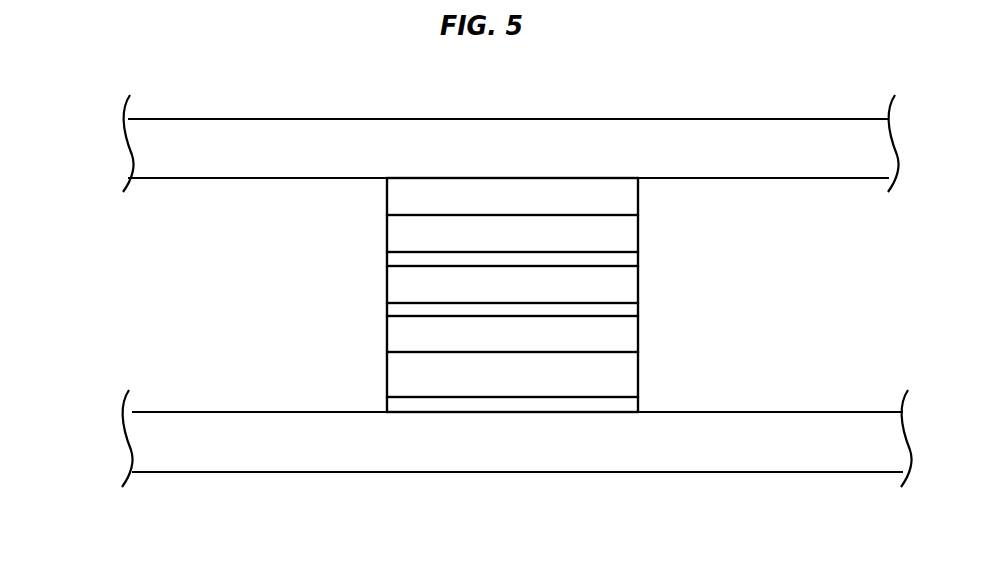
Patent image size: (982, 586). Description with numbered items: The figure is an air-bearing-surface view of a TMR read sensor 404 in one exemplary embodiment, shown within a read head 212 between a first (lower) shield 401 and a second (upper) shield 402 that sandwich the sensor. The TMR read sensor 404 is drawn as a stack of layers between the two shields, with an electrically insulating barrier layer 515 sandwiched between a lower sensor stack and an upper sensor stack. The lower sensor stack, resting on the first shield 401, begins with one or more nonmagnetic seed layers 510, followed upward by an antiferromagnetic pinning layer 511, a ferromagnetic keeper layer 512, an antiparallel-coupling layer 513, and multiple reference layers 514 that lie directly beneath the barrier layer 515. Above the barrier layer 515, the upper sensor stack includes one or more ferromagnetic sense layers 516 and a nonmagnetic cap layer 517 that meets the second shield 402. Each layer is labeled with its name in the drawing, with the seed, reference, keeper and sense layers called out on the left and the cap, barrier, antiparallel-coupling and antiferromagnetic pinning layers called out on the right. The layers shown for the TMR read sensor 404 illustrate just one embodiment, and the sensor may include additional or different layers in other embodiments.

The read head 212 is at (355, 78).
The first shield 401 is at (547, 482).
The second shield 402 is at (705, 108).
The TMR read sensor 404 is at (163, 409).
The seed layers 510 is at (377, 404).
The antiferromagnetic pinning layer 511 is at (653, 385).
The ferromagnetic keeper layer 512 is at (377, 338).
The antiparallel-coupling layer 513 is at (653, 310).
The reference layers 514 is at (377, 284).
The barrier layer 515 is at (653, 260).
The sense layers 516 is at (377, 237).
The cap layer 517 is at (653, 198).